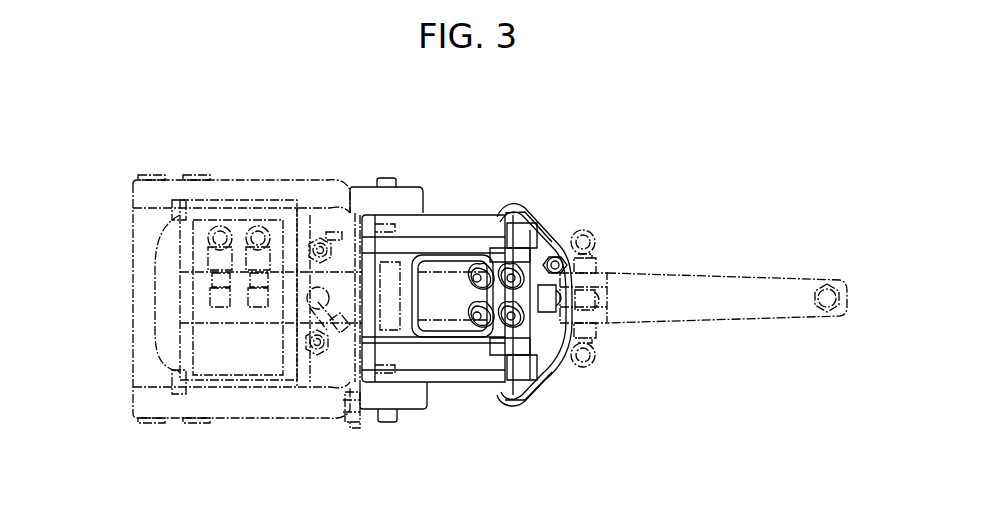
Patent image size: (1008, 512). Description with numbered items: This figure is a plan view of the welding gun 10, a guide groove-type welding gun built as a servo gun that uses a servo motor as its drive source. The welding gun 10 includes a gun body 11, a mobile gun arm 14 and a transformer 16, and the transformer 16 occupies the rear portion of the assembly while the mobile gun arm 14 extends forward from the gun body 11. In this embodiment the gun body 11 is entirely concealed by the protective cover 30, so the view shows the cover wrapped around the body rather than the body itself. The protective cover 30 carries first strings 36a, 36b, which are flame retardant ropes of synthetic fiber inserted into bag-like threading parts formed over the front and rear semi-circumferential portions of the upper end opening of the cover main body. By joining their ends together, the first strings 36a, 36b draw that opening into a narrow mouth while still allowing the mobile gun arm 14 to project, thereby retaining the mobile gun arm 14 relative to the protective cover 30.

The welding gun 10 is at (341, 168).
The gun body 11 is at (400, 196).
The mobile gun arm 14 is at (687, 290).
The transformer 16 is at (181, 337).
The protective cover 30 is at (555, 208).
The first string 36a is at (553, 350).
The first string 36b is at (480, 303).